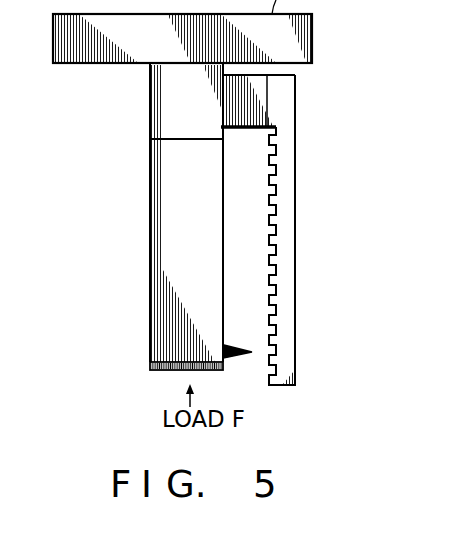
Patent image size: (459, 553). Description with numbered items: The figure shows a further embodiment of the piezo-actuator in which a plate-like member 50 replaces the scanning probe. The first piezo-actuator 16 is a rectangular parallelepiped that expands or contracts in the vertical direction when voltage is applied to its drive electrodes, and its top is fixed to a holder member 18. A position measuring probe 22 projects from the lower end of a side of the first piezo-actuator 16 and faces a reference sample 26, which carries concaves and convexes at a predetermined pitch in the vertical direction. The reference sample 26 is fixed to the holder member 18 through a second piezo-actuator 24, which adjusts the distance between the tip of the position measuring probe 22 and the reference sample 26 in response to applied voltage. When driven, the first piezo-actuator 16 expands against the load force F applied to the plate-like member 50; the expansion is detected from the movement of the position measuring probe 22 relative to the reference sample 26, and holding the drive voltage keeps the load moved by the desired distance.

The first piezo-actuator 16 is at (150, 247).
The holder member 18 is at (150, 105).
The position measuring probe 22 is at (243, 346).
The second piezo-actuator 24 is at (240, 130).
The reference sample 26 is at (296, 212).
The plate-like member 50 is at (156, 371).